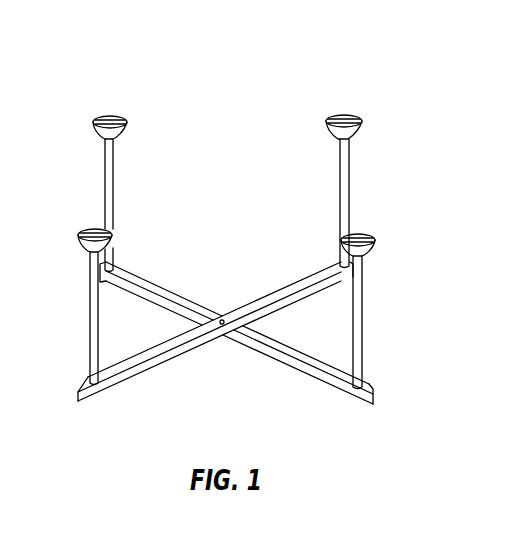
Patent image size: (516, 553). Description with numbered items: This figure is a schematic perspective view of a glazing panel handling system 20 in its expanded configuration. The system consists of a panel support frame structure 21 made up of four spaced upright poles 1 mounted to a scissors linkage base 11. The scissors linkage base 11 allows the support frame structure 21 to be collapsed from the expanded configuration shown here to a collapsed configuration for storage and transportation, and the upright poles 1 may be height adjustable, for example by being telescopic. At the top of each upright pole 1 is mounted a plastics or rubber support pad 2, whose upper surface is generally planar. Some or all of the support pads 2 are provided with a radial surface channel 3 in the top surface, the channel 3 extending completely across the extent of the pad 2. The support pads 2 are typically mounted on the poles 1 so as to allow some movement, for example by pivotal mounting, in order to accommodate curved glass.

The glazing panel handling system 20 is at (226, 226).
The upright pole 1 is at (366, 313).
The panel support frame structure 21 is at (357, 178).
The scissors linkage base 11 is at (277, 359).
The support pad 2 is at (110, 117).
The radial surface channel 3 is at (126, 122).